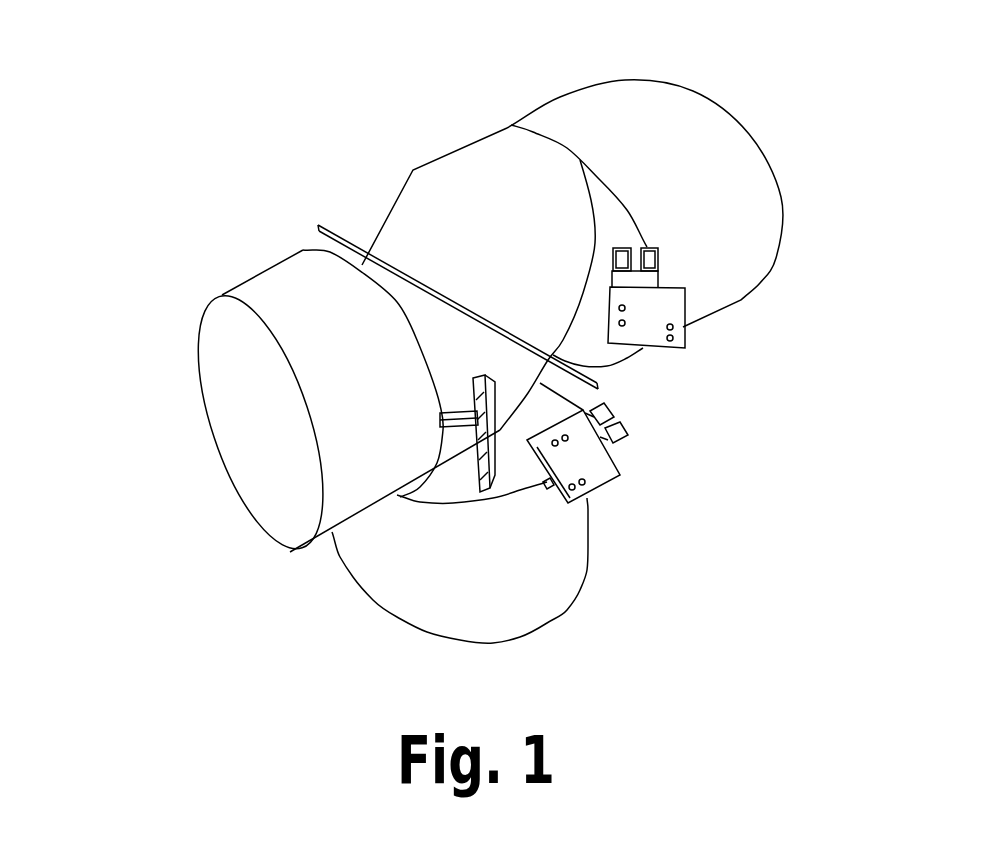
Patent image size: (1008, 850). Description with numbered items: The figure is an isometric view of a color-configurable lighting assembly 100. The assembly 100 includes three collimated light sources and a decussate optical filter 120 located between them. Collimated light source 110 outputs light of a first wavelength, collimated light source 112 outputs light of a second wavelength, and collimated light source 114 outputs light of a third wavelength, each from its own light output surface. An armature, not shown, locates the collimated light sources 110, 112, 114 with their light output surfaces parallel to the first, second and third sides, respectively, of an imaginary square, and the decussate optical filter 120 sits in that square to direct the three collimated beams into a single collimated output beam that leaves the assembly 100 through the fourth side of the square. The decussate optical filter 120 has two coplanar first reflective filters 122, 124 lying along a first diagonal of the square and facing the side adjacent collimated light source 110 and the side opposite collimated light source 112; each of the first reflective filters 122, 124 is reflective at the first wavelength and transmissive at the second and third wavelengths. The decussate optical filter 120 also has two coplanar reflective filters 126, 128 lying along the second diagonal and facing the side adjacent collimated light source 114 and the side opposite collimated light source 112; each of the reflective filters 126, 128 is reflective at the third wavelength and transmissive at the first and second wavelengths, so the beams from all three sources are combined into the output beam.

The color-configurable lighting assembly 100 is at (217, 250).
The collimated light source 110 is at (260, 475).
The collimated light source 112 is at (547, 533).
The collimated light source 114 is at (713, 270).
The decussate optical filter 120 is at (482, 112).
The first reflective filter 122 is at (447, 183).
The first reflective filter 124 is at (515, 377).
The reflective filter 126 is at (318, 225).
The reflective filter 128 is at (597, 386).